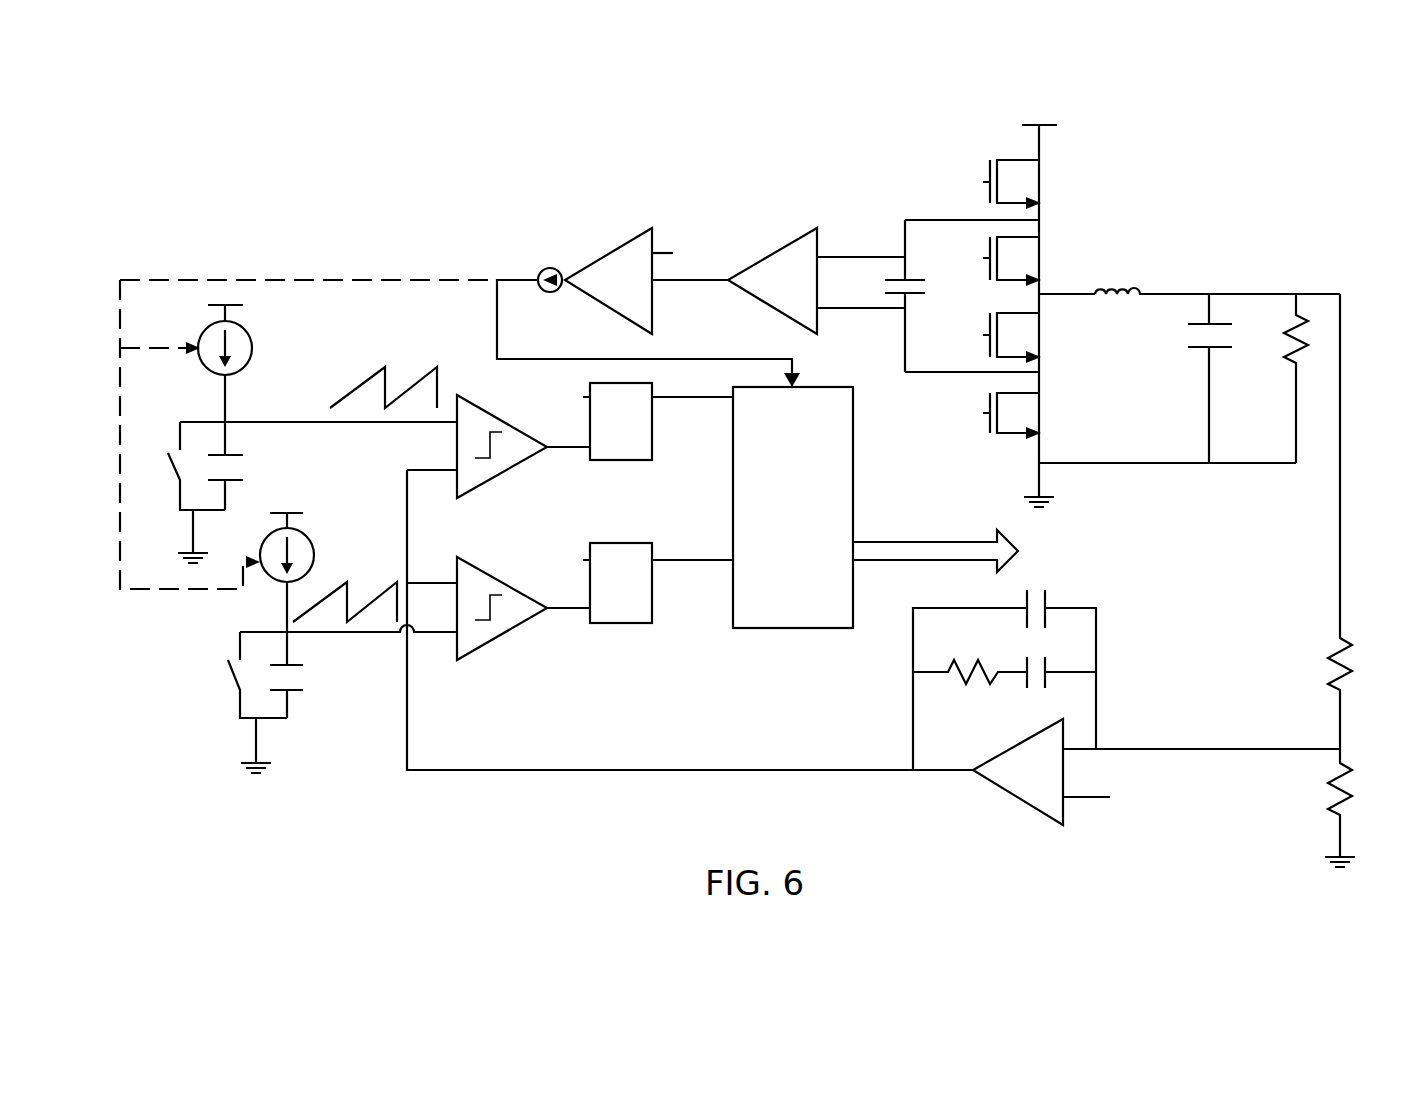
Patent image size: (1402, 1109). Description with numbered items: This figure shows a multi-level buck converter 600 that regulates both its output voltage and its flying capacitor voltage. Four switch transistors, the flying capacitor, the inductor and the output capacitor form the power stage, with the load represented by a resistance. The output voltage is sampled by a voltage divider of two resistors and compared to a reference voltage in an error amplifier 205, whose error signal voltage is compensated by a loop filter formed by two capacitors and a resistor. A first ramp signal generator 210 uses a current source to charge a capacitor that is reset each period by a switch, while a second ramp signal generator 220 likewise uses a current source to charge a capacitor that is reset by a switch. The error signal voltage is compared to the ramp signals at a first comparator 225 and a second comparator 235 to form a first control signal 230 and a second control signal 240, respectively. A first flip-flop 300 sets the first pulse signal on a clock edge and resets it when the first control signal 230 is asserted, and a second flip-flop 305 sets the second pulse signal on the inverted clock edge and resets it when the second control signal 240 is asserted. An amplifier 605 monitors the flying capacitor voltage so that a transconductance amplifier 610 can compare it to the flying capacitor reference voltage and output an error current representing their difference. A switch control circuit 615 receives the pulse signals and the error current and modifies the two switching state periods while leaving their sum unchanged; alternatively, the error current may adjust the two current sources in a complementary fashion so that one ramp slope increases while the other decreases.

The multi-level buck converter 600 is at (716, 92).
The amplifier 605 is at (783, 247).
The transconductance amplifier 610 is at (598, 257).
The first ramp signal generator 210 is at (203, 724).
The second ramp signal generator 220 is at (234, 415).
The second comparator 235 is at (490, 478).
The second control signal 240 is at (557, 450).
The first flip-flop 300 is at (622, 462).
The first comparator 225 is at (497, 640).
The first control signal 230 is at (567, 610).
The second flip-flop 305 is at (635, 625).
The switch control circuit 615 is at (790, 630).
The error amplifier 205 is at (985, 775).